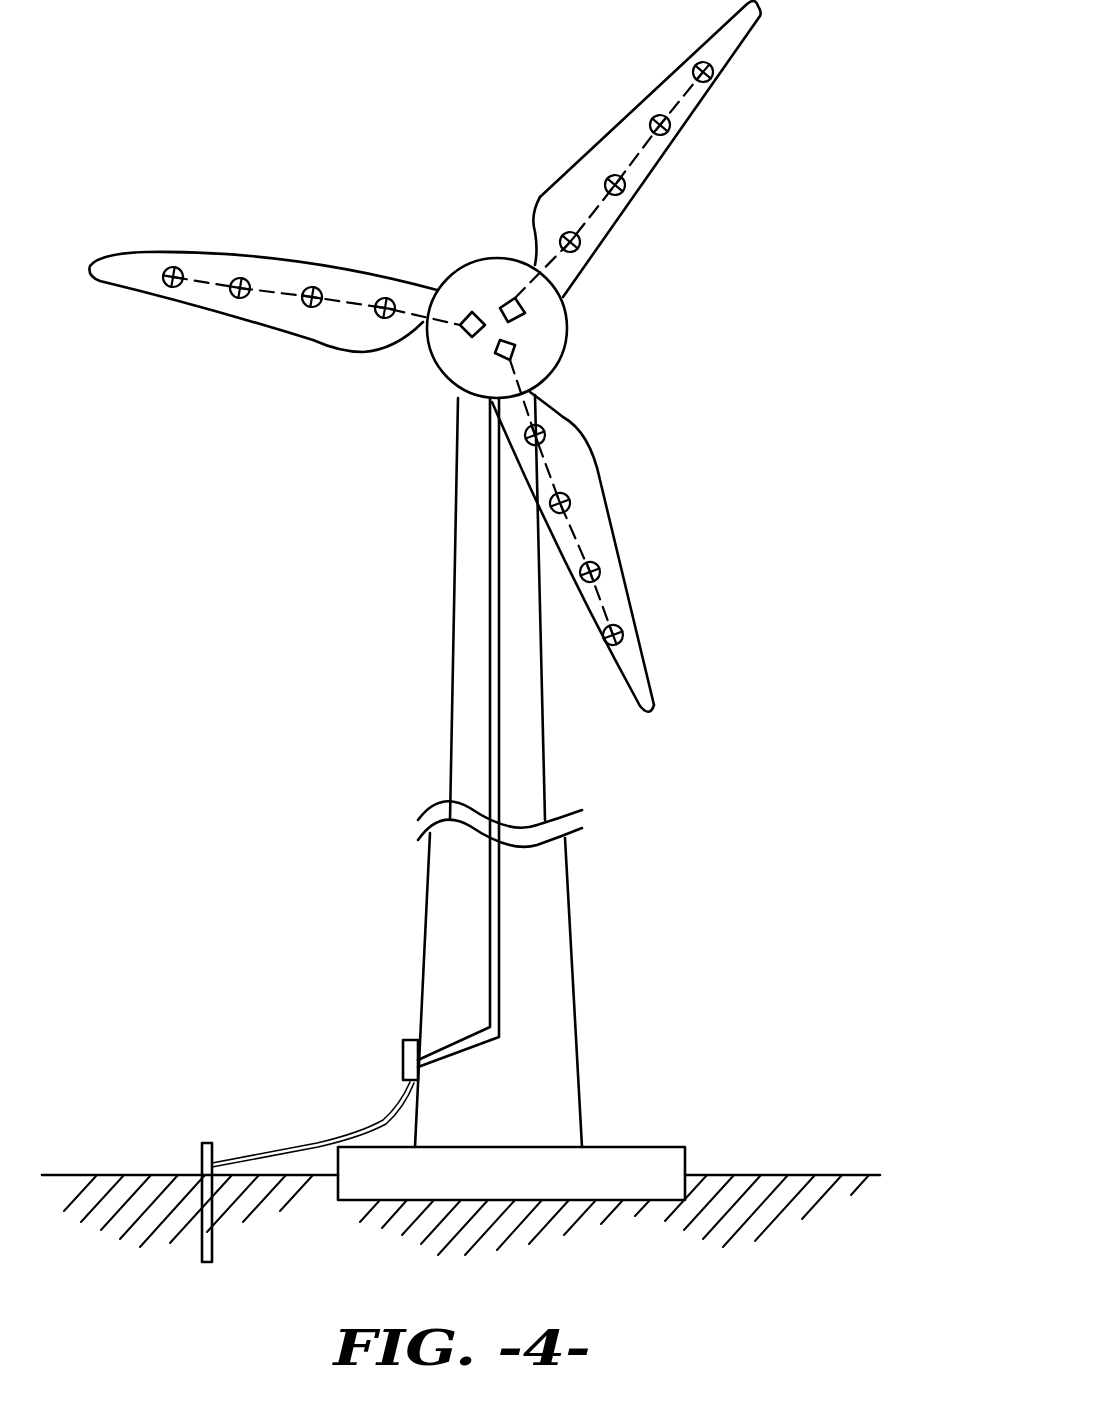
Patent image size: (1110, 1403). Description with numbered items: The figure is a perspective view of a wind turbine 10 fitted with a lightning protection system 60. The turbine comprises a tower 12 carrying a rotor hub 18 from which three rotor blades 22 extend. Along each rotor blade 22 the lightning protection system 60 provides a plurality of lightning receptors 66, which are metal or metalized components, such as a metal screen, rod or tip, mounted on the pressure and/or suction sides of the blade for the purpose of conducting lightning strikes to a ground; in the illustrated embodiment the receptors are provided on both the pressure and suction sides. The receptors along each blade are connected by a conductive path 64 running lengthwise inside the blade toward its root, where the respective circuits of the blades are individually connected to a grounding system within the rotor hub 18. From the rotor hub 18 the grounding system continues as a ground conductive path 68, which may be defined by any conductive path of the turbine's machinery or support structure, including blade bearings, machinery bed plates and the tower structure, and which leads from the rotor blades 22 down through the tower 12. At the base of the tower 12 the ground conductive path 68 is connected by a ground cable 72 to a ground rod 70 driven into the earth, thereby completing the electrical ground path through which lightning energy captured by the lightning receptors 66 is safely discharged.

The wind turbine 10 is at (220, 117).
The tower 12 is at (550, 957).
The rotor hub 18 is at (448, 350).
The rotor blades 22 is at (205, 293).
The lightning protection system 60 is at (460, 238).
The conductor 64 is at (280, 293).
The lightning receptors 66 is at (318, 303).
The ground conductive path 68 is at (490, 670).
The ground rod 70 is at (200, 1153).
The ground cable 72 is at (385, 1120).